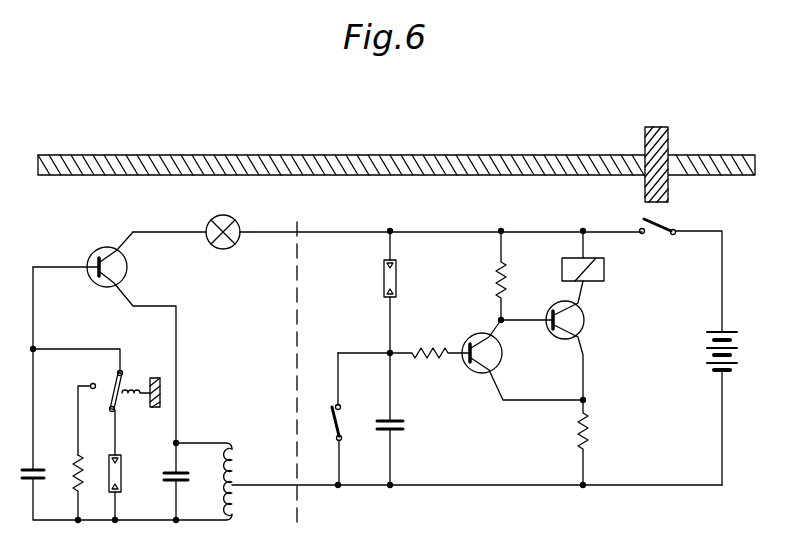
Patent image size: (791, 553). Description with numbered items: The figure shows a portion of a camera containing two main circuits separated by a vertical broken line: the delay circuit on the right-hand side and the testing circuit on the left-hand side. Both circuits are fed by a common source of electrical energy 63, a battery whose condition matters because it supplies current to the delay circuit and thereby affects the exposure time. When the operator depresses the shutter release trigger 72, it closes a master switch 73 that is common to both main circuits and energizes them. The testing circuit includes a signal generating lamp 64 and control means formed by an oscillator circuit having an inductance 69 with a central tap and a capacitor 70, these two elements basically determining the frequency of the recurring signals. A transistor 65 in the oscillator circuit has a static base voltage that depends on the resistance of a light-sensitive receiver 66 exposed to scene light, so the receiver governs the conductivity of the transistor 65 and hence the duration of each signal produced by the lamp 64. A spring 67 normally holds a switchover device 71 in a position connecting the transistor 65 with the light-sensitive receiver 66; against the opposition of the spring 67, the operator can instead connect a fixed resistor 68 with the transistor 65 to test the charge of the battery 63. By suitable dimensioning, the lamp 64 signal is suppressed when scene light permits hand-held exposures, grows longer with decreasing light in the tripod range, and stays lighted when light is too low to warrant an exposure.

The source of electrical energy 63 is at (706, 355).
The signal generating lamp 64 is at (214, 222).
The transistor 65 is at (128, 270).
The light-sensitive receiver 66 is at (123, 468).
The spring 67 is at (136, 382).
The fixed resistor 68 is at (75, 460).
The inductance 69 is at (240, 468).
The capacitor 70 is at (184, 476).
The switchover device 71 is at (110, 392).
The shutter release trigger 72 is at (645, 137).
The master switch 73 is at (663, 220).